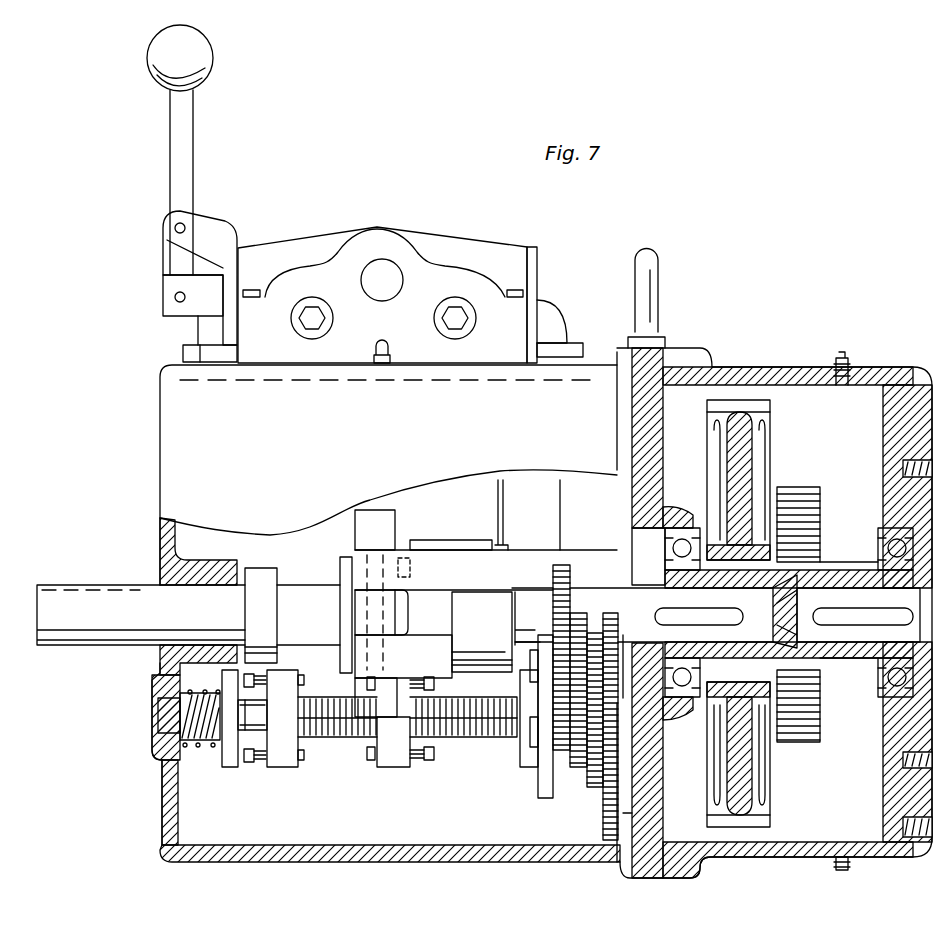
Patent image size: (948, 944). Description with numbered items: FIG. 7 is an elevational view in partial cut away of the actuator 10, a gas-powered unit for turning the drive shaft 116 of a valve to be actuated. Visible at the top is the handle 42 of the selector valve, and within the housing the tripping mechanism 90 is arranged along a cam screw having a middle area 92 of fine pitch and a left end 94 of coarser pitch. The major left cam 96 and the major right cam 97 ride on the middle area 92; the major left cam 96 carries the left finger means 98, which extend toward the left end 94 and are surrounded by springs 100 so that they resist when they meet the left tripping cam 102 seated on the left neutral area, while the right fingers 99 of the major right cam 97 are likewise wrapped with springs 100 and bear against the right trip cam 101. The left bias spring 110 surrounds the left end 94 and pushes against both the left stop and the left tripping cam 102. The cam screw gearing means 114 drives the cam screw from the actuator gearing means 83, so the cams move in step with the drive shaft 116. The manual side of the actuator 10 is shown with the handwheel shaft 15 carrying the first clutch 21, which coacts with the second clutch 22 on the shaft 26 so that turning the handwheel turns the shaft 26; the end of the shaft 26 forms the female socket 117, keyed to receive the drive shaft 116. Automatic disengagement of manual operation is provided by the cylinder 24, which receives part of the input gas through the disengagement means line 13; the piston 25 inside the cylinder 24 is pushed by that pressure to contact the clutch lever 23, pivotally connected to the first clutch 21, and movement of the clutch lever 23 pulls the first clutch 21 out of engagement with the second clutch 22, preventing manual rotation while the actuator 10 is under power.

The actuator 10 is at (722, 275).
The disengagement means line 13 is at (505, 510).
The handwheel shaft 15 is at (72, 585).
The first clutch 21 is at (348, 558).
The second clutch 22 is at (358, 672).
The clutch lever 23 is at (353, 607).
The cylinder 24 is at (447, 540).
The piston 25 is at (402, 557).
The shaft 26 is at (620, 594).
The handle 42 is at (205, 137).
The actuator gearing means 83 is at (800, 487).
The tripping mechanism 90 is at (297, 784).
The middle area 92 is at (323, 740).
The left end 94 is at (187, 745).
The major left cam 96 is at (278, 767).
The major right cam 97 is at (388, 768).
The left finger means 98 is at (301, 680).
The right fingers 99 is at (430, 672).
The springs 100 is at (255, 673).
The right trip cam 101 is at (528, 768).
The left tripping cam 102 is at (228, 757).
The left bias spring 110 is at (198, 743).
The cam screw gearing means 114 is at (577, 768).
The drive shaft 116 is at (856, 630).
The female socket 117 is at (835, 560).